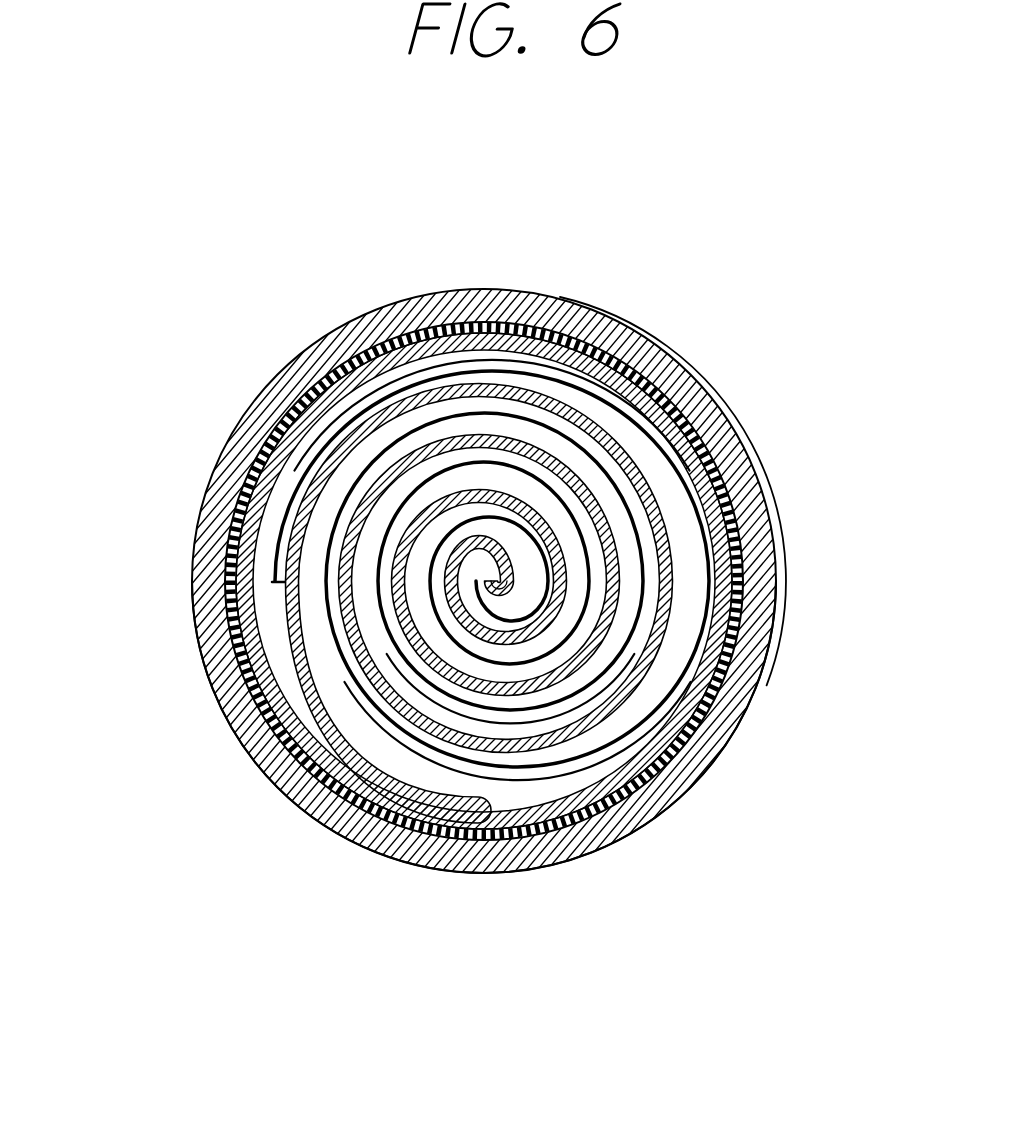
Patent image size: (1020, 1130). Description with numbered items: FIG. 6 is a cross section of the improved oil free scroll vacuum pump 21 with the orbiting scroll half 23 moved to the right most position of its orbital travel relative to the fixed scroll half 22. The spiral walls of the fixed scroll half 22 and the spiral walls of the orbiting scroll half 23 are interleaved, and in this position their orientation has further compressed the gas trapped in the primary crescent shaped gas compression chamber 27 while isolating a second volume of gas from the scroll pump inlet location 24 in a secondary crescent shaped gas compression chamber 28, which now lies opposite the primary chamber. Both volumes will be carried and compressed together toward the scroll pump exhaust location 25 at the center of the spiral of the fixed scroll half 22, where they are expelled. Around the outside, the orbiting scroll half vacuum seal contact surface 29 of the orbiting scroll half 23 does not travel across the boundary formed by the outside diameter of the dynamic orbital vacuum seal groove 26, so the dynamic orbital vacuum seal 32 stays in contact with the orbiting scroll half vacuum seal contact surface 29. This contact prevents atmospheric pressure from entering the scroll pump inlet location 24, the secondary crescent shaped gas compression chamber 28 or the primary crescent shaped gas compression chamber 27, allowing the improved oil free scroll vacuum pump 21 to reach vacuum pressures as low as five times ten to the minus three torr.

The improved oil free scroll vacuum pump 21 is at (478, 290).
The fixed scroll half 22 is at (713, 418).
The orbiting scroll half 23 is at (765, 680).
The scroll pump inlet location 24 is at (292, 704).
The scroll pump exhaust location 25 is at (490, 582).
The dynamic orbital vacuum seal groove 26 is at (750, 520).
The primary crescent shaped gas compression chamber 27 is at (305, 613).
The secondary crescent shaped gas compression chamber 28 is at (670, 670).
The orbiting scroll half vacuum seal contact surface 29 is at (778, 605).
The dynamic orbital vacuum seal 32 is at (630, 790).